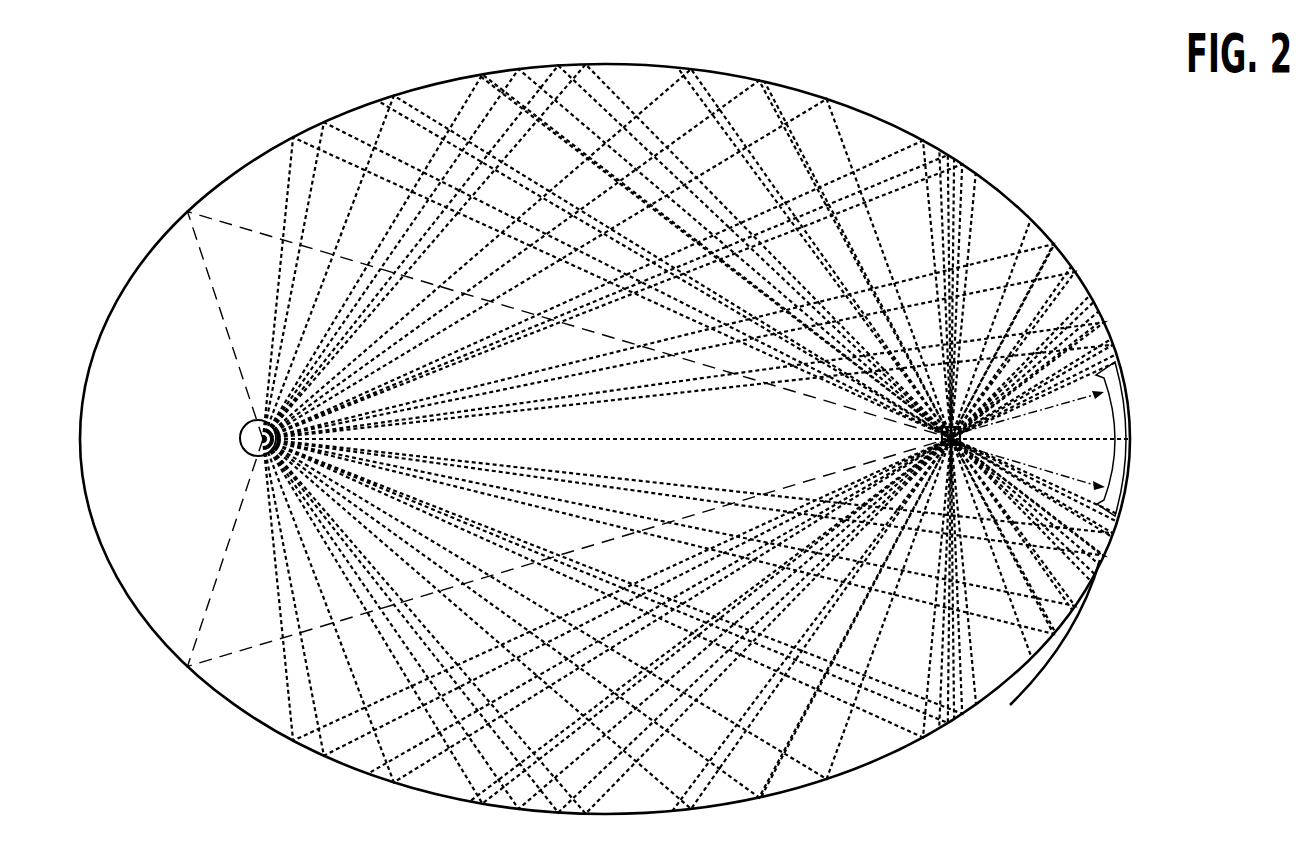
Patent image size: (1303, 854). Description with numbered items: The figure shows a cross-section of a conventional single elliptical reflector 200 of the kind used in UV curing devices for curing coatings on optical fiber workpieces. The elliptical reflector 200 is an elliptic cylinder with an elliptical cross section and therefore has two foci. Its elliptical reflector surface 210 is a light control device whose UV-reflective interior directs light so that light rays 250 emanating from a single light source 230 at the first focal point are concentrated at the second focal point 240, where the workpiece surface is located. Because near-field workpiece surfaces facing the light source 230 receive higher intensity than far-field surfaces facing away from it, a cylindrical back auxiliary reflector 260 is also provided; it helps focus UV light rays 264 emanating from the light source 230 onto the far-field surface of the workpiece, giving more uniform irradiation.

The elliptical reflector 200 is at (657, 439).
The elliptical reflector surface 210 is at (927, 143).
The light source 230 is at (240, 438).
The second focal point 240 is at (963, 437).
The light rays 250 is at (1042, 611).
The cylindrical back auxiliary reflector 260 is at (1118, 400).
The UV light rays 264 is at (1112, 477).